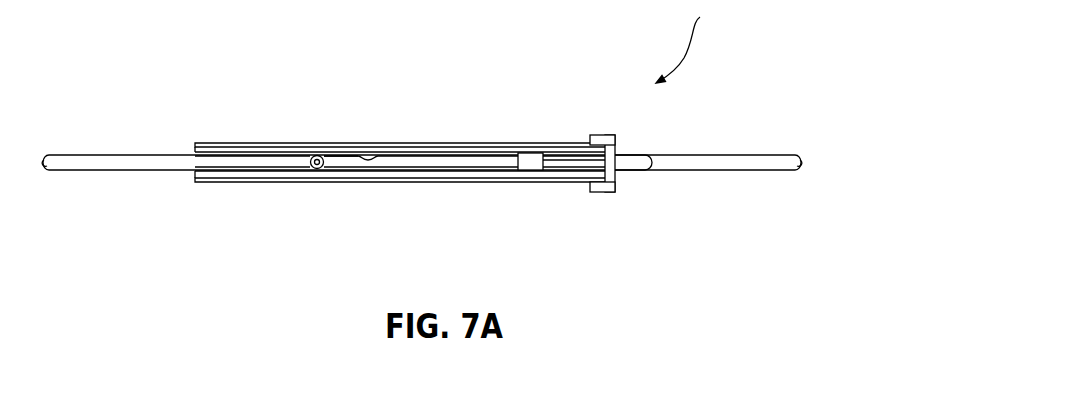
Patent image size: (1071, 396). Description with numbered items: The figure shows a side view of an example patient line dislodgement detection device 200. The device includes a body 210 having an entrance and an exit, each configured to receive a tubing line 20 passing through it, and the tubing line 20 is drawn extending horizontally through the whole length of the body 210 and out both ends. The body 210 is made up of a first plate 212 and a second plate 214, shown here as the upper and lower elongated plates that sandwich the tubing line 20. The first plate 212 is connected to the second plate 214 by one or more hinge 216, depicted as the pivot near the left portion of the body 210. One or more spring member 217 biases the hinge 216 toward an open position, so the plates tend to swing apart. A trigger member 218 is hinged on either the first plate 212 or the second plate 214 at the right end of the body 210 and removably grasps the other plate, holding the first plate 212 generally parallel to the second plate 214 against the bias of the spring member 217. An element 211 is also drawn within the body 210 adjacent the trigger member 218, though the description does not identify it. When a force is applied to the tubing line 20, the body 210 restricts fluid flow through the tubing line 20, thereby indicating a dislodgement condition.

The patient line dislodgement detection device 200 is at (705, 43).
The tubing line 20 is at (115, 155).
The body 210 is at (500, 143).
The slider block 211 is at (545, 160).
The first plate 212 is at (263, 143).
The second plate 214 is at (432, 182).
The hinge 216 is at (313, 175).
The spring member 217 is at (372, 158).
The trigger member 218 is at (617, 144).